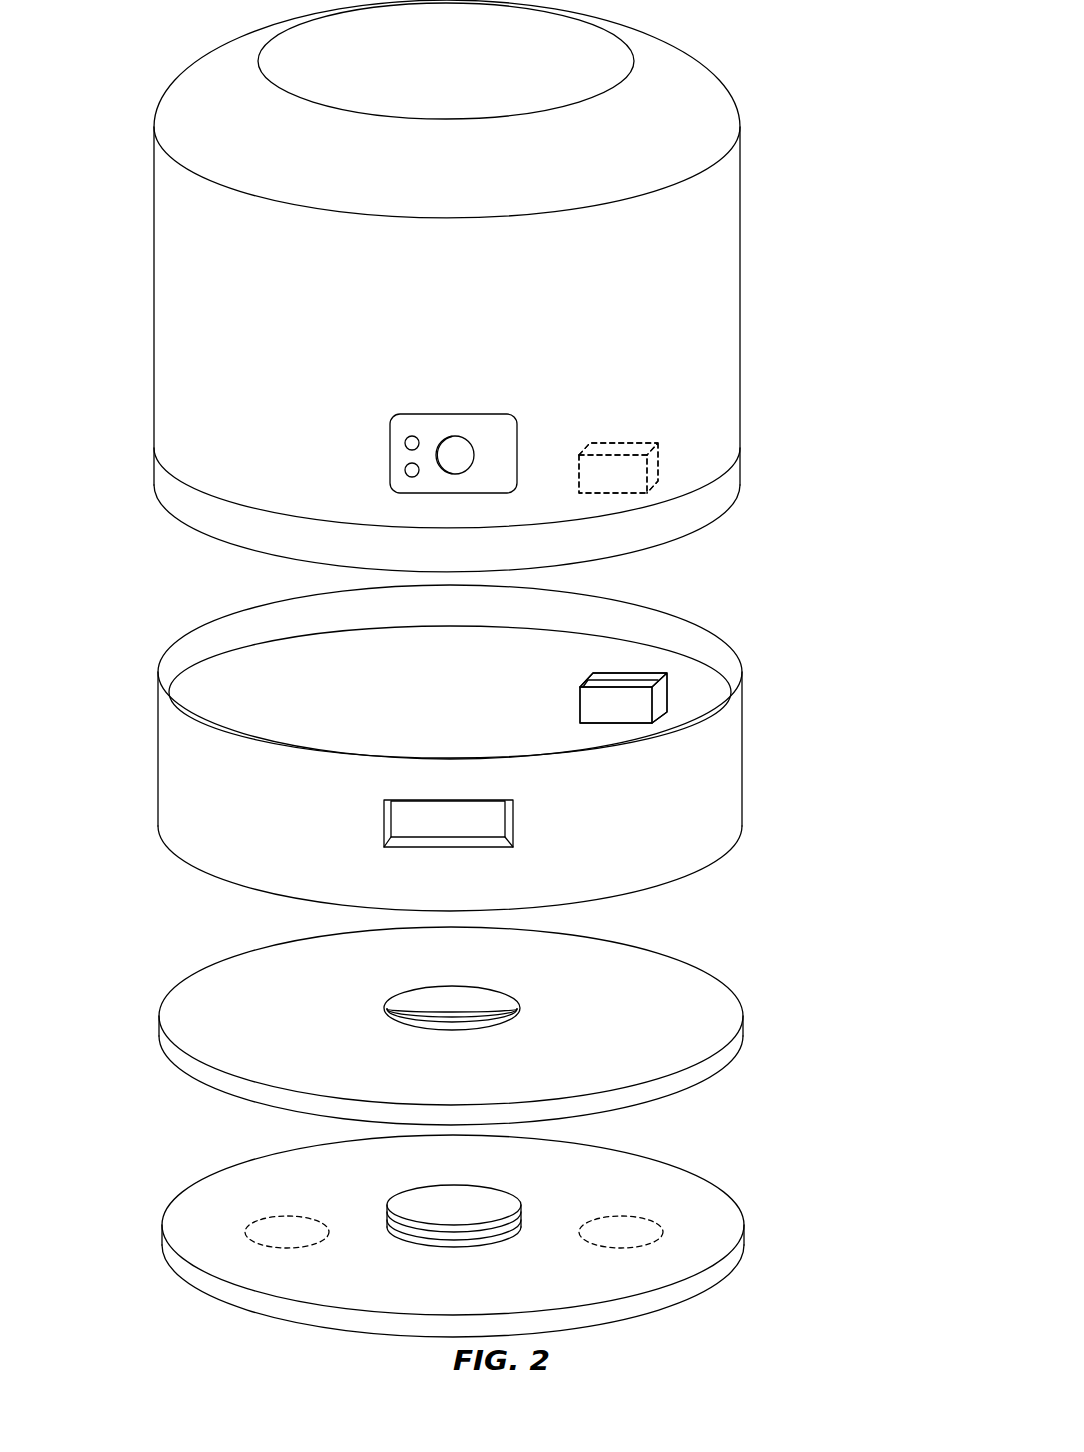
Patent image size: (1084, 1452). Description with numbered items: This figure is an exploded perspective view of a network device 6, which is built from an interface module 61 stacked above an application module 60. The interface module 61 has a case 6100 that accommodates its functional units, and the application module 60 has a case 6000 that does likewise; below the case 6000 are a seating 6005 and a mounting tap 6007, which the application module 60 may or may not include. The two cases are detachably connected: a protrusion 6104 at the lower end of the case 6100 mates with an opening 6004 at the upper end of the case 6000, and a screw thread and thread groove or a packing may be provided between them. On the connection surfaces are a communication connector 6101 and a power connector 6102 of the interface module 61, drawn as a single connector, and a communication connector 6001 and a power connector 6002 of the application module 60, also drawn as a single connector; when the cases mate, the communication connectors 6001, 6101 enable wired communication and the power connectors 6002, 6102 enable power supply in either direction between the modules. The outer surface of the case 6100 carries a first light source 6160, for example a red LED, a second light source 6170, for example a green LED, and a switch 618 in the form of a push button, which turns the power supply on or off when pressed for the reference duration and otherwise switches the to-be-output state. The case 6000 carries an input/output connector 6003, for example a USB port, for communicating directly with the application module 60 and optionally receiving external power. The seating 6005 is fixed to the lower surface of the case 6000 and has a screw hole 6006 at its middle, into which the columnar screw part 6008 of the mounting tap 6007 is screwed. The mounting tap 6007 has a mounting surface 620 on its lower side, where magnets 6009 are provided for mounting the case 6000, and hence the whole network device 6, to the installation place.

The network device 6 is at (946, 161).
The interface module 61 is at (809, 29).
The application module 60 is at (809, 623).
The case 6100 is at (771, 312).
The protrusion 6104 is at (155, 482).
The switch 618 is at (455, 436).
The first light source 6160 is at (404, 446).
The second light source 6170 is at (404, 472).
The communication connector 6101 is at (605, 443).
The power connector 6102 is at (618, 468).
The case 6000 is at (743, 748).
The opening 6004 is at (228, 637).
The communication connector 6001 is at (601, 677).
The power connector 6002 is at (623, 698).
The input/output connector 6003 is at (385, 820).
The seating 6005 is at (744, 1036).
The screw hole 6006 is at (385, 1017).
The mounting tap 6007 is at (745, 1222).
The screw part 6008 is at (455, 1247).
The magnet 6009 is at (295, 1247).
The mounting surface 620 is at (567, 1330).